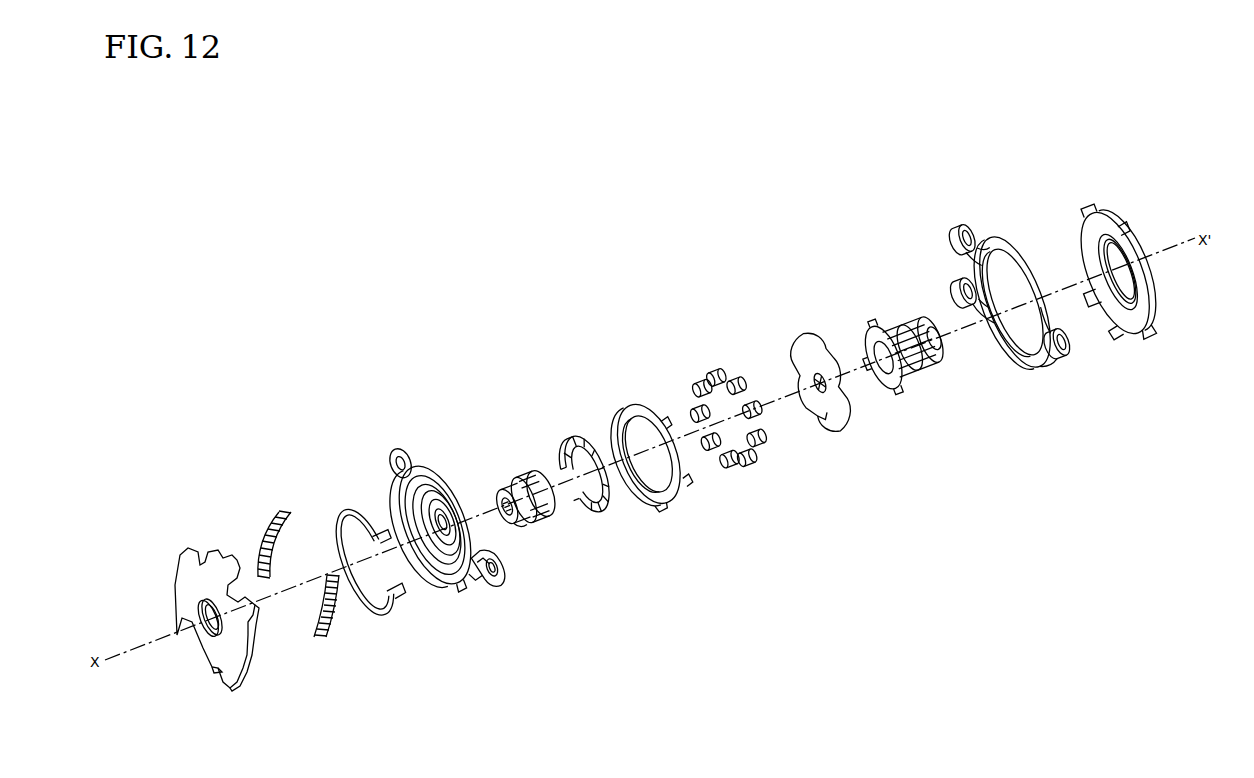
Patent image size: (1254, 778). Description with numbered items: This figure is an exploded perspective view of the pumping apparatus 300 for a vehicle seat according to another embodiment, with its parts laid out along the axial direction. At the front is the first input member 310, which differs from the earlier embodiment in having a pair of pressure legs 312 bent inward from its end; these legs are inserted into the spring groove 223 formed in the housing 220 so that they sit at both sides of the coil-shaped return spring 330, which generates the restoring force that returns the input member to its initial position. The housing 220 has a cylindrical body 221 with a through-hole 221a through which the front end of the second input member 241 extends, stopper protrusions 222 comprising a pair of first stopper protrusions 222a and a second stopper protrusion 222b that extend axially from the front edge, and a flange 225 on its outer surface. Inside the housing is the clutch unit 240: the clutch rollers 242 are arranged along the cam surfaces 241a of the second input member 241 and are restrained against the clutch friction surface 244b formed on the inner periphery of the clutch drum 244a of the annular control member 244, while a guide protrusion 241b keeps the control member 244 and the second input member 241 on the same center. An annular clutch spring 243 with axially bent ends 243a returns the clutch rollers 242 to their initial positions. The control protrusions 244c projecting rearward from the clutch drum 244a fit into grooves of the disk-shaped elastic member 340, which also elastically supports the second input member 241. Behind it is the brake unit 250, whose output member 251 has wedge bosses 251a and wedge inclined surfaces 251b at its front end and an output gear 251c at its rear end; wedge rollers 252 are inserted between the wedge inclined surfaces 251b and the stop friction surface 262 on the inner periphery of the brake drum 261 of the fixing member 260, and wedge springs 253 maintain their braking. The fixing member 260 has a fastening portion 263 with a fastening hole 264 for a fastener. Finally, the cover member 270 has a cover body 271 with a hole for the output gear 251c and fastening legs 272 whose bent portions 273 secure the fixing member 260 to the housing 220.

The pumping apparatus 300 is at (447, 199).
The first input member 310 is at (230, 654).
The pressure legs 312 is at (256, 616).
The return spring 330 is at (328, 640).
The elastic member 340 is at (822, 437).
The clutch unit 240 is at (617, 340).
The clutch spring 243 is at (387, 547).
The bent ends 243a is at (392, 600).
The clutch rollers 242 is at (575, 444).
The control member 244 is at (671, 468).
The clutch drum 244a is at (655, 505).
The clutch friction surface 244b is at (632, 497).
The control protrusions 244c is at (688, 473).
The housing 220 is at (463, 538).
The cylindrical body 221 is at (425, 455).
The through-hole 221a is at (447, 452).
The stopper protrusions 222 is at (492, 614).
The first stopper protrusions 222a is at (472, 589).
The second stopper protrusion 222b is at (423, 569).
The spring groove 223 is at (498, 580).
The flange 225 is at (502, 574).
The second input member 241 is at (543, 502).
The cam surfaces 241a is at (525, 465).
The guide protrusion 241b is at (550, 530).
The brake unit 250 is at (943, 152).
The output member 251 is at (924, 359).
The wedge bosses 251a is at (895, 400).
The wedge inclined surfaces 251b is at (914, 395).
The output gear 251c is at (932, 368).
The wedge rollers 252 is at (726, 371).
The wedge springs 253 is at (742, 372).
The fixing member 260 is at (1026, 305).
The brake drum 261 is at (1010, 372).
The stop friction surface 262 is at (1027, 372).
The fastening portion 263 is at (975, 222).
The fastening hole 264 is at (993, 237).
The cover member 270 is at (1143, 261).
The cover body 271 is at (1147, 323).
The fastening legs 272 is at (1130, 230).
The bent portions 273 is at (1113, 340).